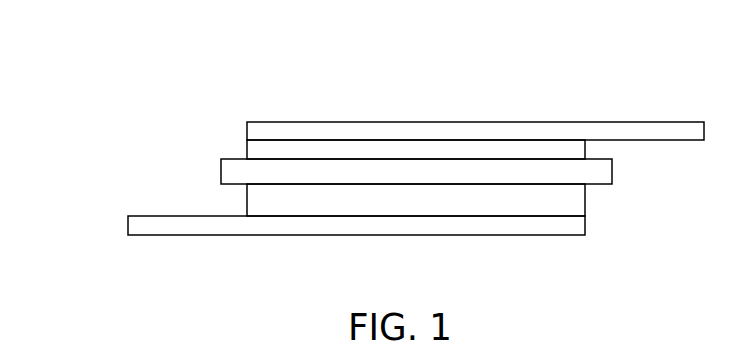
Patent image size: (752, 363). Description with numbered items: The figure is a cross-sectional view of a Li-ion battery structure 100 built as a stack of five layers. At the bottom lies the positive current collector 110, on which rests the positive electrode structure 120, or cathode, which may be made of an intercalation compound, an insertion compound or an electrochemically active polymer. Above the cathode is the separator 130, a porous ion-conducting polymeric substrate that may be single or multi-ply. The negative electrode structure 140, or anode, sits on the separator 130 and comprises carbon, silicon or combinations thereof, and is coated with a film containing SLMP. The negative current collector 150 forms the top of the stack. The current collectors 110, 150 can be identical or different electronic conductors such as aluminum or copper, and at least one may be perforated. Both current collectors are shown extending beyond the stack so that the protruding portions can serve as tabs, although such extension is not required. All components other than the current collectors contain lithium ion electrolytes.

The Li-ion battery structure 100 is at (182, 82).
The positive current collector 110 is at (183, 235).
The positive electrode structure 120 is at (585, 205).
The separator 130 is at (221, 168).
The negative electrode structure 140 is at (535, 152).
The negative current collector 150 is at (382, 130).